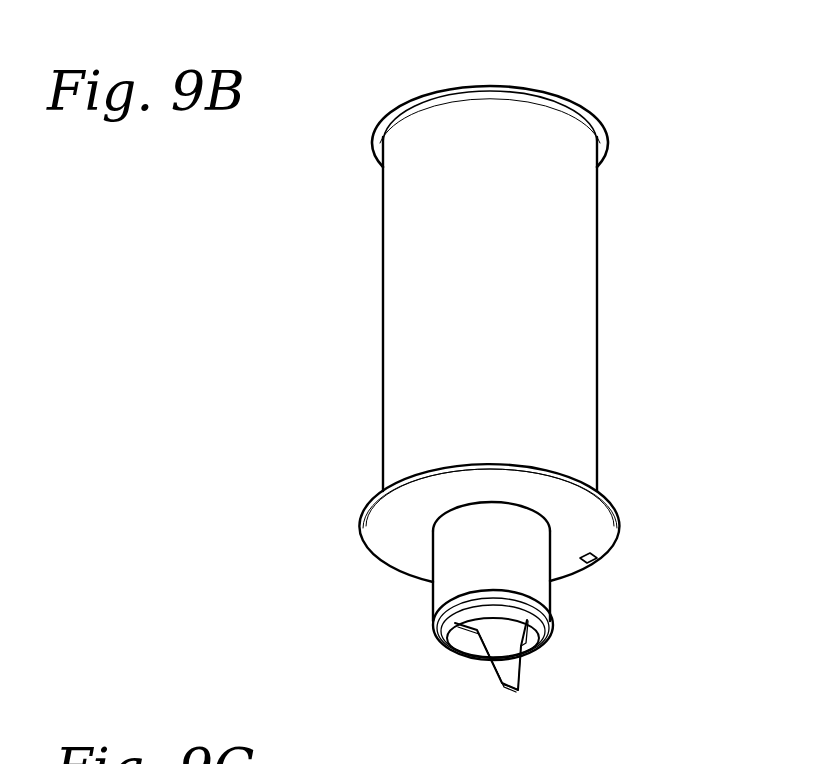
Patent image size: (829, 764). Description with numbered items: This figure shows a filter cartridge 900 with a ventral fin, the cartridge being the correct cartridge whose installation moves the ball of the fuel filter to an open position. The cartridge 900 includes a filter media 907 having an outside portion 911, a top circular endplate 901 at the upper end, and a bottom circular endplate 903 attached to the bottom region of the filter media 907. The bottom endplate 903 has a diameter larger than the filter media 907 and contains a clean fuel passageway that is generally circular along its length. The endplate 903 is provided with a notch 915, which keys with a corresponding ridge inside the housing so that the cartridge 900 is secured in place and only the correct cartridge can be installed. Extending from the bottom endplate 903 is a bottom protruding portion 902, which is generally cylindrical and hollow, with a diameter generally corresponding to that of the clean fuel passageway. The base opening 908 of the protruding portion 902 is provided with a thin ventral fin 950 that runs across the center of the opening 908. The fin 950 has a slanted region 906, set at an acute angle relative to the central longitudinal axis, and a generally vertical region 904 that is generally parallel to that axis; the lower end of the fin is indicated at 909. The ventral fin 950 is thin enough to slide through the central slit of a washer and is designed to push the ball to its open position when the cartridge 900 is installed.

The filter cartridge 900 is at (362, 97).
The top circular endplate 901 is at (590, 110).
The outside portion 911 is at (580, 277).
The filter media 907 is at (598, 370).
The bottom circular endplate 903 is at (352, 570).
The notch 915 is at (596, 561).
The bottom protruding portion 902 is at (550, 590).
The base opening 908 is at (460, 643).
The generally vertical region 904 is at (530, 673).
The slanted region 906 is at (488, 668).
The tab end 909 is at (510, 690).
The ventral fin 950 is at (545, 708).